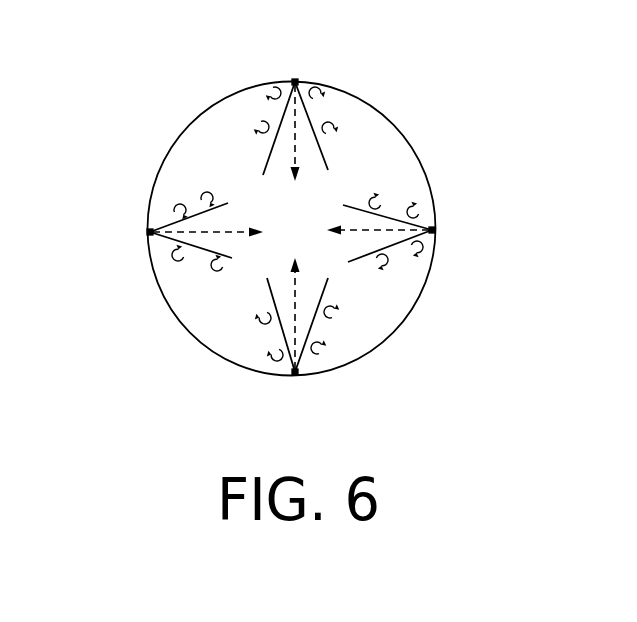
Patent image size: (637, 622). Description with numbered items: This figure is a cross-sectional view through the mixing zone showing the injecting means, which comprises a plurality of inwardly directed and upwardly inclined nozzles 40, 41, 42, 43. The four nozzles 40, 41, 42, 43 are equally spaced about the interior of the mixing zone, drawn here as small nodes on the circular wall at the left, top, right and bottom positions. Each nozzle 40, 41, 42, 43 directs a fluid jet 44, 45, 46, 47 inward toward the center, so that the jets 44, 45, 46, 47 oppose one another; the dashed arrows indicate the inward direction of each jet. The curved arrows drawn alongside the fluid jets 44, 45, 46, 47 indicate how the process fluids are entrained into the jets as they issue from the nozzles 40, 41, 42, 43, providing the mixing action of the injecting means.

The nozzle 40 is at (181, 187).
The nozzle 41 is at (335, 96).
The nozzle 42 is at (408, 238).
The nozzle 43 is at (339, 345).
The fluid jet 44 is at (192, 205).
The fluid jet 45 is at (312, 118).
The fluid jet 46 is at (400, 242).
The fluid jet 47 is at (313, 327).